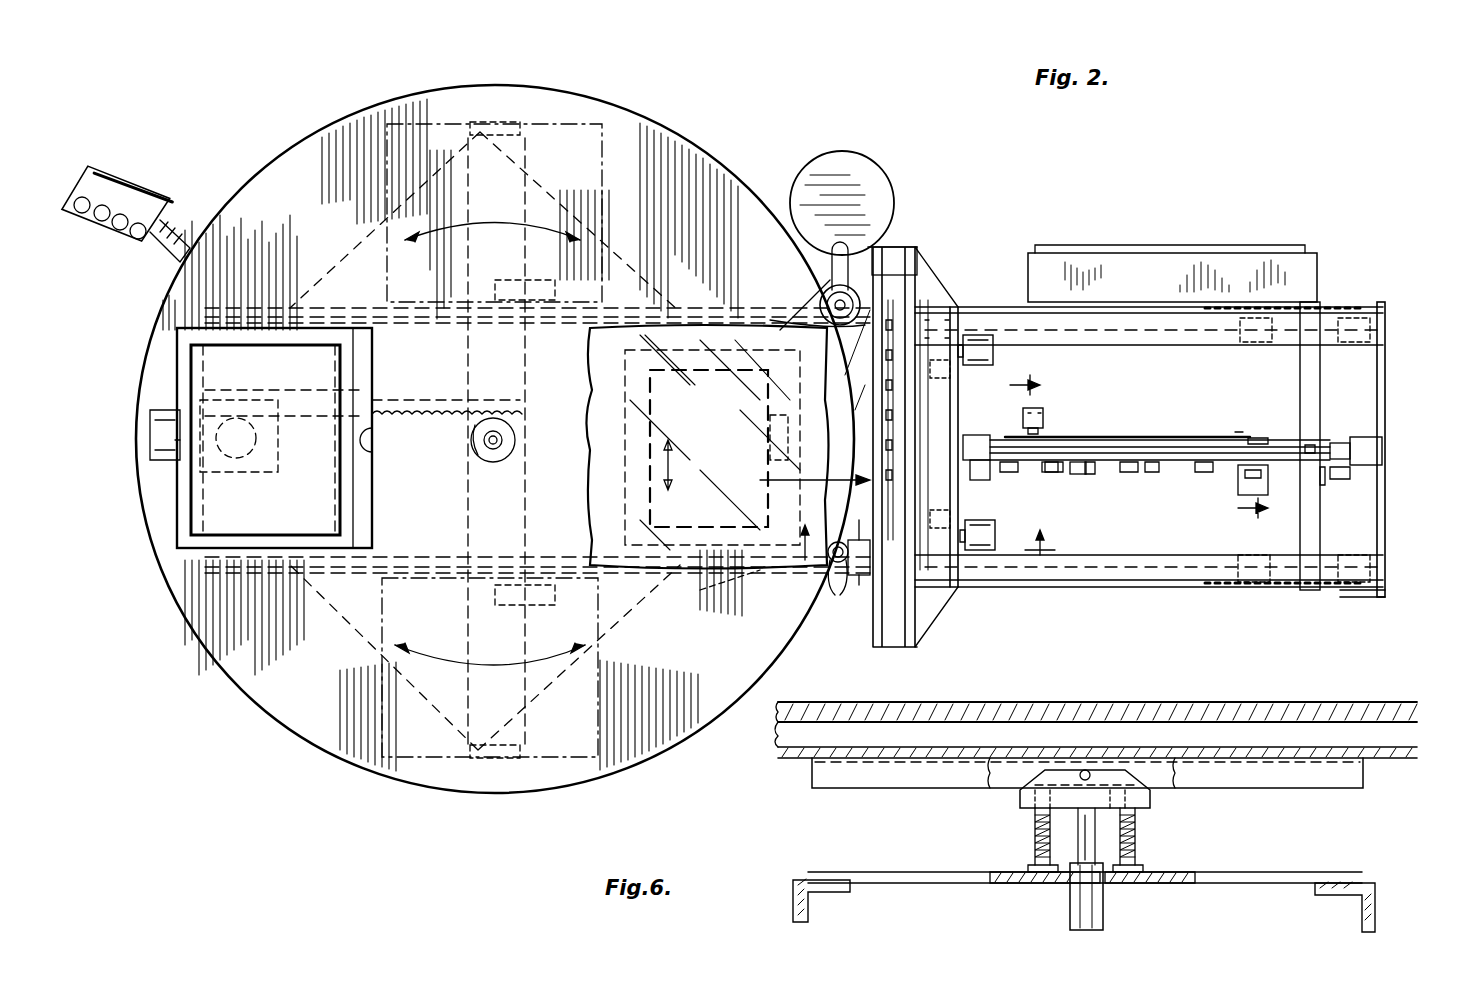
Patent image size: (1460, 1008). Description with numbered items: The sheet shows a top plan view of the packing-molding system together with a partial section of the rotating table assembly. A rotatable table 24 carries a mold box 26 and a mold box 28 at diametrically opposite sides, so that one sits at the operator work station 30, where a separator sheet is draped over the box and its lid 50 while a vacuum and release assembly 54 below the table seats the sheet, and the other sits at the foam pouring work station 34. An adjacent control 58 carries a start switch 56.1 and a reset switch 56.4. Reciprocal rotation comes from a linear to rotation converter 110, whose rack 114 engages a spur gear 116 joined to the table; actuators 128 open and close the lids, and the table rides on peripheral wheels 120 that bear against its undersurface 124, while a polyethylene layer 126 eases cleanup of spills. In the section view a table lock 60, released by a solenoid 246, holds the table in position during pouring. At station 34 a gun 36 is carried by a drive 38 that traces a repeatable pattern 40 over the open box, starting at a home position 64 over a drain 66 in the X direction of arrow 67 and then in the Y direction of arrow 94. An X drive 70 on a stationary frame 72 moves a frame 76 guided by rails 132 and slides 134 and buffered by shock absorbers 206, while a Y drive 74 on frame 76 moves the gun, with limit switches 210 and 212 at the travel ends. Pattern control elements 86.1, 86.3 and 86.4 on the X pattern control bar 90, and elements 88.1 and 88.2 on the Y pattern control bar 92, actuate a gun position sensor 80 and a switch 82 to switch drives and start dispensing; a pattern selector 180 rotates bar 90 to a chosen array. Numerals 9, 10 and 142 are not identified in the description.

In FIG. 2, the table 24 is at (300, 752).
In FIG. 6, the table 24 is at (1100, 700).
In FIG. 2, the wheels 120 is at (480, 120).
In FIG. 2, the lid 50 is at (365, 525).
In FIG. 2, the linear to rotation converter 110 is at (308, 392).
In FIG. 2, the vacuum and release assembly 54 is at (235, 475).
In FIG. 2, the mold box 26 is at (170, 545).
In FIG. 2, the work station 30 is at (108, 391).
In FIG. 2, the rack 114 is at (395, 400).
In FIG. 2, the spur gear 116 is at (470, 430).
In FIG. 2, the actuators 128 is at (405, 432).
In FIG. 2, the pattern 40 is at (655, 408).
In FIG. 2, the table lock 60 is at (780, 400).
In FIG. 6, the table lock 60 is at (1175, 828).
In FIG. 2, the double headed arrow 94 is at (668, 465).
In FIG. 2, the Y drive 74 is at (757, 467).
In FIG. 2, the section line 10 is at (911, 517).
In FIG. 2, the mold box 28 is at (770, 575).
In FIG. 2, the drain 66 is at (830, 290).
In FIG. 2, the home position 64 is at (820, 305).
In FIG. 2, the arrow 67 is at (740, 305).
In FIG. 2, the work station 34 is at (853, 365).
In FIG. 2, the Y direction limit sensor switch 212 is at (890, 255).
In FIG. 2, the pattern control bar 92 is at (900, 470).
In FIG. 2, the gun position sensor 80 is at (855, 575).
In FIG. 2, the gun 36 is at (840, 600).
In FIG. 2, the rail 132 is at (1165, 335).
In FIG. 2, the frame 76 is at (1165, 585).
In FIG. 2, the slide 134 is at (1360, 310).
In FIG. 2, the drive 38 is at (1169, 269).
In FIG. 2, the frame 72 is at (1370, 540).
In FIG. 2, the shock absorber 206 is at (978, 332).
In FIG. 2, the pattern control element 88.1 is at (895, 385).
In FIG. 2, the pattern control element 88.2 is at (895, 410).
In FIG. 2, the X drive 70 is at (1199, 413).
In FIG. 2, the lead screw 142 is at (1115, 425).
In FIG. 2, the pattern control bar 90 is at (1102, 470).
In FIG. 2, the pattern control element 86.3 is at (1075, 460).
In FIG. 2, the pattern control element 86.4 is at (1035, 485).
In FIG. 2, the pattern control element 86.1 is at (1255, 462).
In FIG. 2, the switch 82 is at (1245, 491).
In FIG. 2, the X direction limit switch 210 is at (1342, 435).
In FIG. 2, the pattern selector 180 is at (1345, 480).
In FIG. 2, the section line 9 is at (1148, 454).
In FIG. 2, the control 58 is at (135, 175).
In FIG. 2, the start switch 56.1 is at (78, 200).
In FIG. 2, the reset switch 56.4 is at (138, 240).
In FIG. 6, the layer 126 is at (1360, 695).
In FIG. 6, the undersurface 124 is at (790, 755).
In FIG. 6, the solenoid 246 is at (1100, 912).